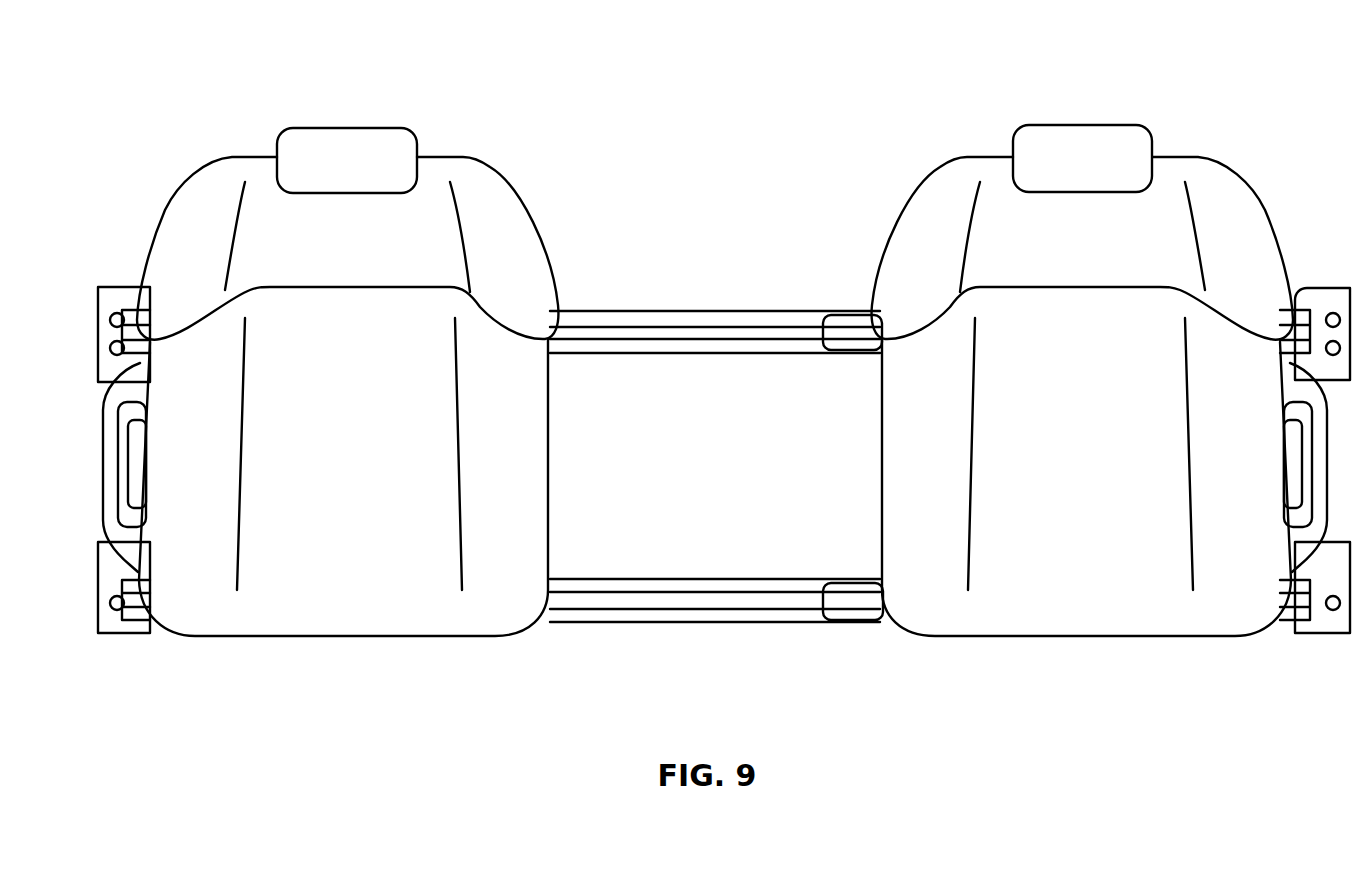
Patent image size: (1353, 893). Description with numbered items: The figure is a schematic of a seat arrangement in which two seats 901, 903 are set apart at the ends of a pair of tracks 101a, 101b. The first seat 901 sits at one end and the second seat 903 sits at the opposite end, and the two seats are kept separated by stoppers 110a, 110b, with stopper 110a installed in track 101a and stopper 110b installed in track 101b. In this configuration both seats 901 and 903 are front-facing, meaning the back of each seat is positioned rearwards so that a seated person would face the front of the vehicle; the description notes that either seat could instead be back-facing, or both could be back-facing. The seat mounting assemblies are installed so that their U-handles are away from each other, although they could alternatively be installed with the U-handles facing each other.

The seat 901 is at (358, 140).
The seat 903 is at (1064, 133).
The track 101a is at (644, 310).
The track 101b is at (633, 624).
The stopper 110a is at (821, 311).
The stopper 110b is at (865, 624).